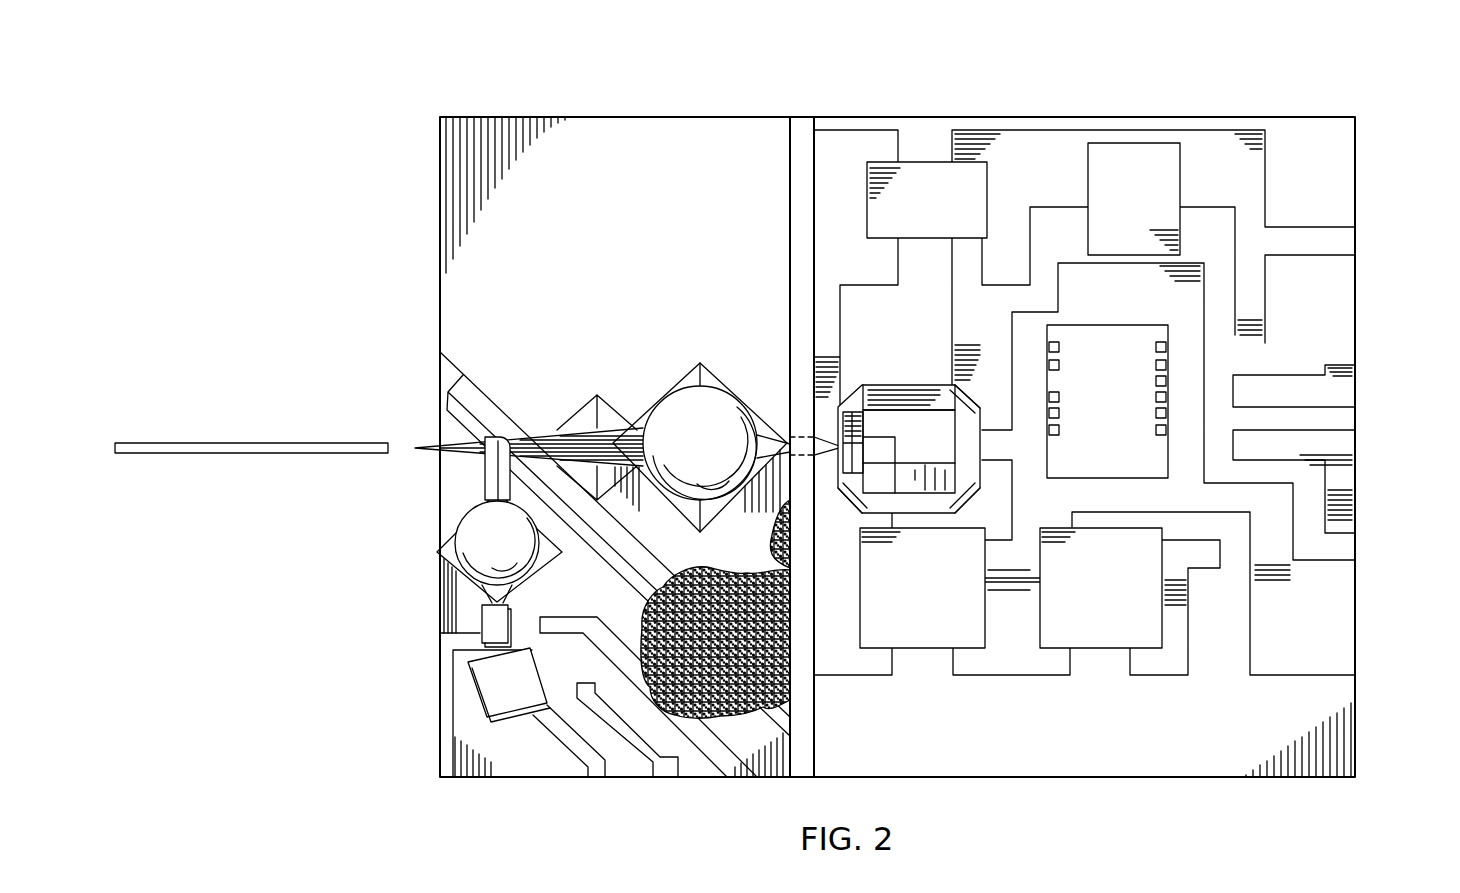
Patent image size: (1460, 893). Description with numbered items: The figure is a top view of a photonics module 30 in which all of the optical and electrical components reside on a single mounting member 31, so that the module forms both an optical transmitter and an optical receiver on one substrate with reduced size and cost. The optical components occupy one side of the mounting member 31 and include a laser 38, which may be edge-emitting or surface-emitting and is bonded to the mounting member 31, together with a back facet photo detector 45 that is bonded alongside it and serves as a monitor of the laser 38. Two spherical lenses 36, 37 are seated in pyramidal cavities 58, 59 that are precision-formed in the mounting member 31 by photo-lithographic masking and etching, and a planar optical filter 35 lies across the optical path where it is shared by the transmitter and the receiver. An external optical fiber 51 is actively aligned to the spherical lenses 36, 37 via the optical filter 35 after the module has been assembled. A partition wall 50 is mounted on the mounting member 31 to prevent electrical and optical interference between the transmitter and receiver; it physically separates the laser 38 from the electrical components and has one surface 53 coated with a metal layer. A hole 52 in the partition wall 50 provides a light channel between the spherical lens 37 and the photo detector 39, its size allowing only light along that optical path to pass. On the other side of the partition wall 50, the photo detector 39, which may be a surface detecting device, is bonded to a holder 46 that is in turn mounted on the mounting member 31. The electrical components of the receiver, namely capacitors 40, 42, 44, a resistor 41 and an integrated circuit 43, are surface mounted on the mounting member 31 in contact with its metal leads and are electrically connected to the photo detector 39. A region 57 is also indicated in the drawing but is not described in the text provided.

The photonics module 30 is at (1362, 54).
The mounting member 31 is at (1358, 170).
The planar optical filter 35 is at (446, 376).
The spherical lens 36 is at (470, 514).
The spherical lens 37 is at (656, 396).
The laser 38 is at (478, 617).
The photo detector 39 is at (858, 404).
The capacitor 40 is at (1098, 652).
The resistor 41 is at (920, 158).
The capacitor 42 is at (1184, 172).
The integrated circuit 43 is at (1172, 363).
The capacitor 44 is at (918, 652).
The back facet photo detector 45 is at (497, 722).
The holder 46 is at (909, 415).
The partition wall 50 is at (808, 116).
The external optical fiber 51 is at (248, 441).
The hole 52 is at (803, 428).
The surface 53 is at (786, 184).
The potting compound 57 is at (728, 680).
The pyramidal cavity 58 is at (443, 570).
The pyramidal cavity 59 is at (698, 360).